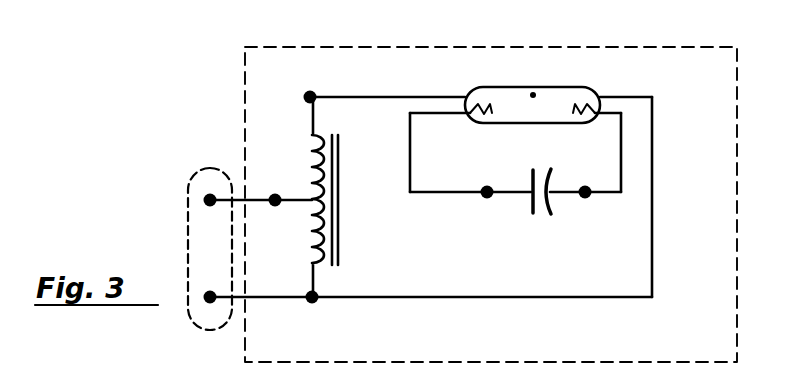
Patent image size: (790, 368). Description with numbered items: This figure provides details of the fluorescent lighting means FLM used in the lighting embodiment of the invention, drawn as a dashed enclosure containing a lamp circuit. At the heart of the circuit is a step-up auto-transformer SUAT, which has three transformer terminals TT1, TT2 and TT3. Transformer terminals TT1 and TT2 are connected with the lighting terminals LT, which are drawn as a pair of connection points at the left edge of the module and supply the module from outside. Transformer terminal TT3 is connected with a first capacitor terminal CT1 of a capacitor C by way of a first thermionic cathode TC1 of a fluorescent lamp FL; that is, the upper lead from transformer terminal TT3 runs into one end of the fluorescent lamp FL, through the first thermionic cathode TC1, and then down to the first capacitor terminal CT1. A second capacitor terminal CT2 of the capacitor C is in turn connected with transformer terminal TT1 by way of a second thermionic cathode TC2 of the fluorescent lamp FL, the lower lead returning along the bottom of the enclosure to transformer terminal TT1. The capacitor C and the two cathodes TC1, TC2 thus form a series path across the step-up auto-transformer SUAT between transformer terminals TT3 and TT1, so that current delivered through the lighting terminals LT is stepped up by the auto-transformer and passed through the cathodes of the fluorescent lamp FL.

The fluorescent lighting means FLM is at (232, 112).
The lighting terminals LT is at (188, 192).
The transformer terminal TT1 is at (315, 303).
The transformer terminal TT2 is at (278, 195).
The transformer terminal TT3 is at (316, 93).
The step-up auto-transformer SUAT is at (350, 229).
The fluorescent lamp FL is at (535, 123).
The first thermionic cathode TC1 is at (494, 106).
The second thermionic cathode TC2 is at (577, 108).
The capacitor C is at (540, 213).
The first capacitor terminal CT1 is at (485, 197).
The second capacitor terminal CT2 is at (585, 198).